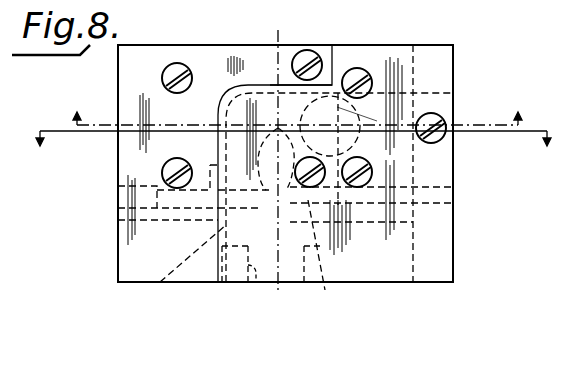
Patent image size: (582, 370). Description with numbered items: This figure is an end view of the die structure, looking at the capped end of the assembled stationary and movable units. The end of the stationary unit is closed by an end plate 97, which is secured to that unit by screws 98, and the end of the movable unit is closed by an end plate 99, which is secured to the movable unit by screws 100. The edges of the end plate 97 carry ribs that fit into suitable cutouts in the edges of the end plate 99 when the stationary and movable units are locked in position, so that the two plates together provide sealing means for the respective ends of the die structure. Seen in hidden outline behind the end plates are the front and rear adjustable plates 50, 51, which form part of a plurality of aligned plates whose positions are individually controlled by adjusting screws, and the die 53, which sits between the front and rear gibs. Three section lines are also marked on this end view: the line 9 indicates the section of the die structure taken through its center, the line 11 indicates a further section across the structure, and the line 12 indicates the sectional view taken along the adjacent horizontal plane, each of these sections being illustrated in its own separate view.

The end plate 97 is at (386, 58).
The screws 98 is at (370, 85).
The end plate 99 is at (118, 97).
The screws 100 is at (170, 84).
The section line 9- 9 is at (277, 162).
The section line 11- 11 is at (296, 111).
The section line 12- 12 is at (288, 147).
The front adjustable plate 50 is at (160, 282).
The rear adjustable plate 51 is at (325, 255).
The die 53 is at (257, 282).